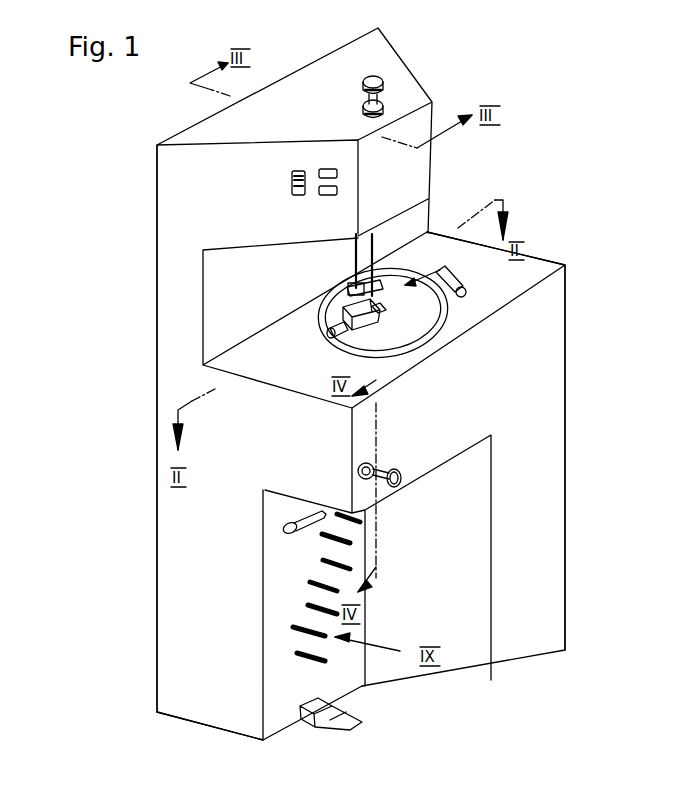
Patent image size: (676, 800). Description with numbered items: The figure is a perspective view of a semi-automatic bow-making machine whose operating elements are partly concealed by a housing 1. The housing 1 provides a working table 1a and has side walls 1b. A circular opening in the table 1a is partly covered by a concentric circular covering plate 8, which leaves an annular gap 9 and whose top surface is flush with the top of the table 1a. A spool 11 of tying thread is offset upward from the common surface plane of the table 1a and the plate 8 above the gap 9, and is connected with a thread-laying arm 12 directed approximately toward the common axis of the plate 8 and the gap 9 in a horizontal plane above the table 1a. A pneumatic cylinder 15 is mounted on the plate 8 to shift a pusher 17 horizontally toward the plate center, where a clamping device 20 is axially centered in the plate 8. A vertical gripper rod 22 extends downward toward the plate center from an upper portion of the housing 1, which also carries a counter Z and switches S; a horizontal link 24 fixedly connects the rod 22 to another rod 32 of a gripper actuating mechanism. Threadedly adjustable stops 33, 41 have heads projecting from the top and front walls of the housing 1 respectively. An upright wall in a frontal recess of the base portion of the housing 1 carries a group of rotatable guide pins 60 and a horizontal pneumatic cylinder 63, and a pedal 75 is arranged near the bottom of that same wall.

The housing 1 is at (170, 293).
The working table 1a is at (535, 272).
The side walls 1b is at (274, 462).
The covering plate 8 is at (410, 330).
The annular gap 9 is at (335, 352).
The spool 11 is at (450, 276).
The thread-laying arm 12 is at (412, 282).
The pneumatic cylinder 15 is at (330, 336).
The pusher 17 is at (347, 313).
The clamping device 20 is at (384, 308).
The vertical gripper rod 22 is at (374, 246).
The horizontal link 24 is at (347, 286).
The rod 32 is at (352, 264).
The threadedly adjustable stop 33 is at (380, 78).
The threadedly adjustable stop 41 is at (396, 468).
The rotatable guide pins 60 is at (292, 627).
The horizontal pneumatic cylinder 63 is at (303, 534).
The pedal 75 is at (331, 718).
The switches S is at (328, 169).
The counter Z is at (292, 184).